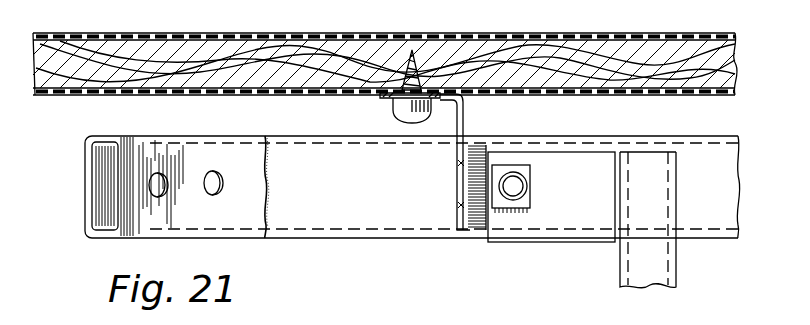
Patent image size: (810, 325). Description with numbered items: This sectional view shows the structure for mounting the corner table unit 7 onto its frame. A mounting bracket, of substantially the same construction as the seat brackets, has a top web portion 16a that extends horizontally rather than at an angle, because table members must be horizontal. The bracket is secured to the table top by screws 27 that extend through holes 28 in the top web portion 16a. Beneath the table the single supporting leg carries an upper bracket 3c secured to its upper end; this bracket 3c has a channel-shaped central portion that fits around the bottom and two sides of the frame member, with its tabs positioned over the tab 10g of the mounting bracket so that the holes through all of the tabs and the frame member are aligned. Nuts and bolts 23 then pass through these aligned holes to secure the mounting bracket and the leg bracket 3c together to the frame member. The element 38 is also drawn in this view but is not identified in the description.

The corner table unit 7 is at (568, 45).
The holes 28 is at (434, 73).
The screws 27 is at (393, 106).
The top web portion 16a is at (447, 90).
The tab 10g is at (478, 232).
The pad 38 is at (505, 232).
The bracket 3c is at (580, 218).
The nuts and bolts 23 is at (515, 189).